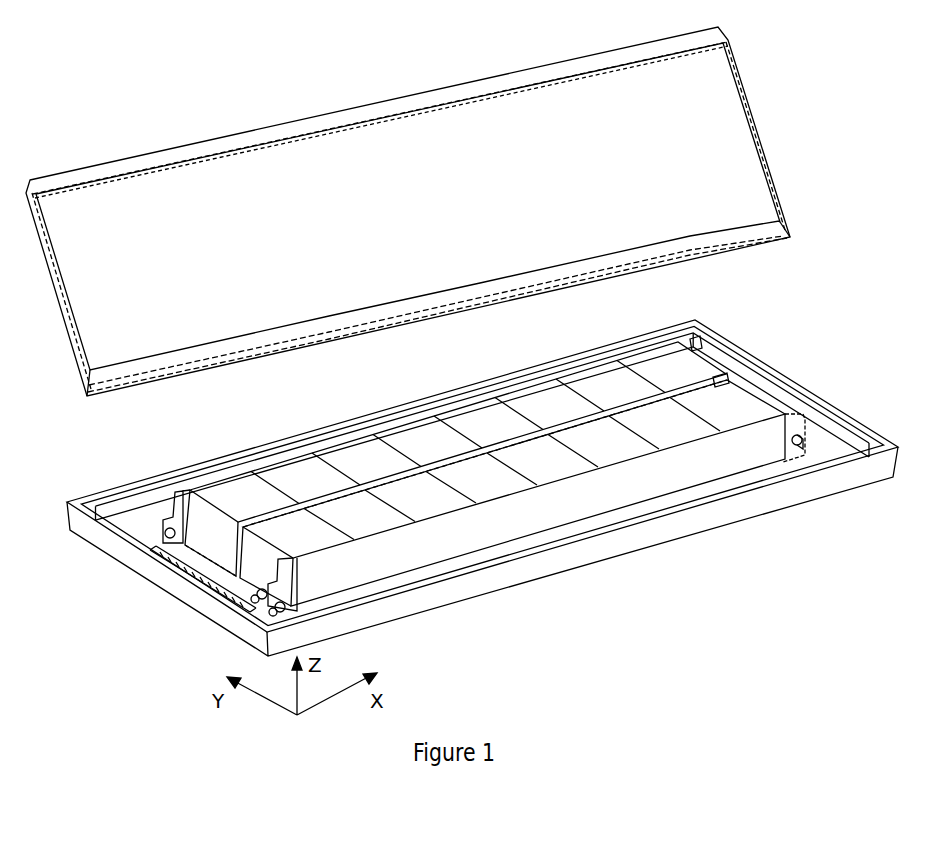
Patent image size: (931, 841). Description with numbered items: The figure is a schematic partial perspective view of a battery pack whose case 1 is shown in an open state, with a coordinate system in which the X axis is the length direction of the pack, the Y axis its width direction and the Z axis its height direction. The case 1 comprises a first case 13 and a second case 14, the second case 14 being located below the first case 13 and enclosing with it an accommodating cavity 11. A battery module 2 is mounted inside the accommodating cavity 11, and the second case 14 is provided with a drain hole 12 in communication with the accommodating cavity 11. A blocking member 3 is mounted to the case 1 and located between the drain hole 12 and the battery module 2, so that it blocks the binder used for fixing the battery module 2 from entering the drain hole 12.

The case 1 is at (831, 265).
The battery module 2 is at (200, 520).
The blocking member 3 is at (187, 563).
The accommodating cavity 11 is at (818, 433).
The drain hole 12 is at (240, 607).
The first case 13 is at (723, 237).
The second case 14 is at (727, 337).